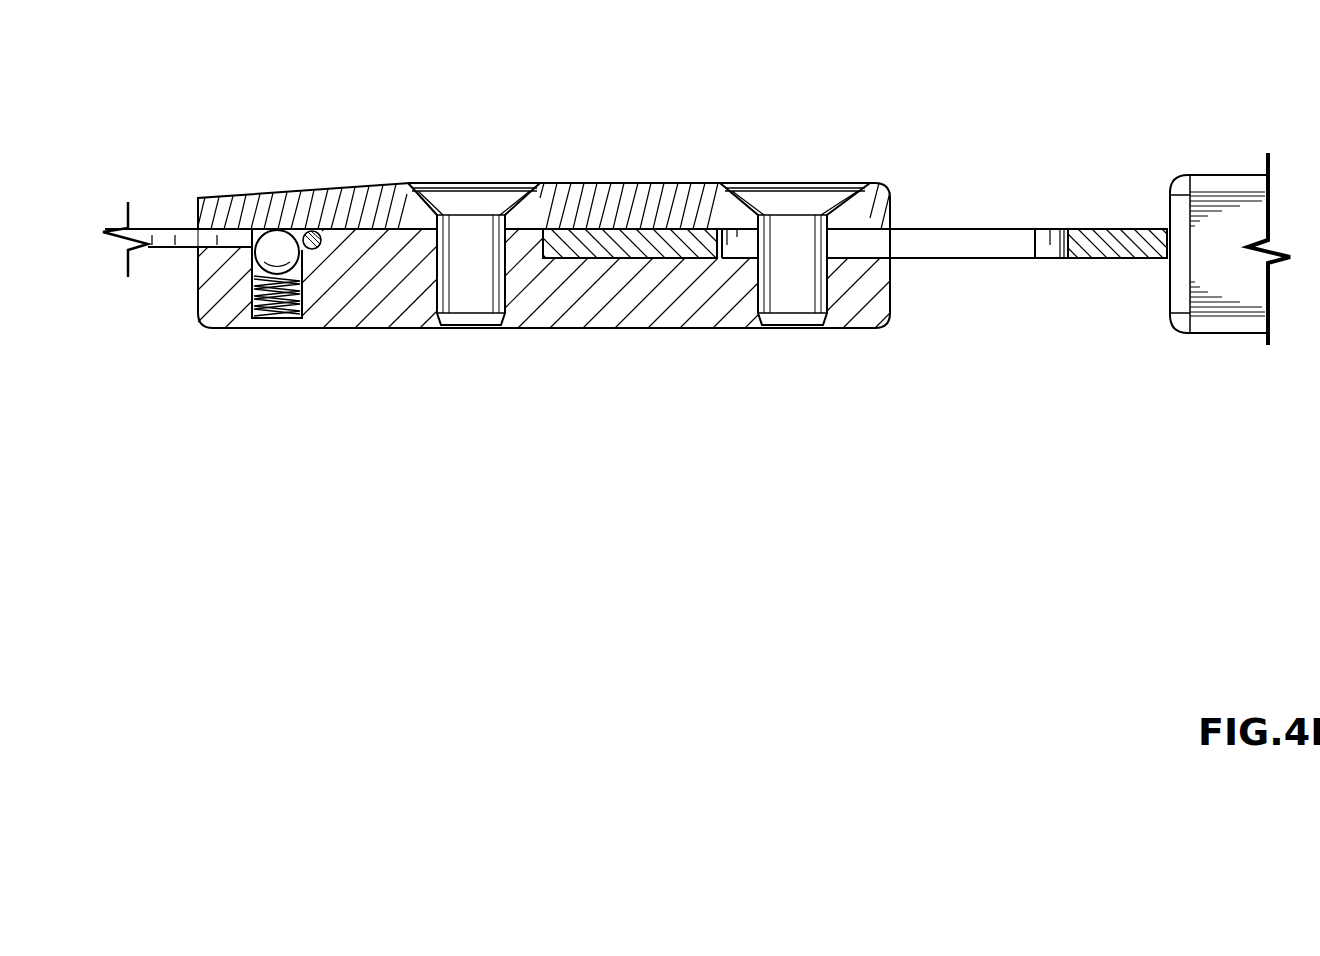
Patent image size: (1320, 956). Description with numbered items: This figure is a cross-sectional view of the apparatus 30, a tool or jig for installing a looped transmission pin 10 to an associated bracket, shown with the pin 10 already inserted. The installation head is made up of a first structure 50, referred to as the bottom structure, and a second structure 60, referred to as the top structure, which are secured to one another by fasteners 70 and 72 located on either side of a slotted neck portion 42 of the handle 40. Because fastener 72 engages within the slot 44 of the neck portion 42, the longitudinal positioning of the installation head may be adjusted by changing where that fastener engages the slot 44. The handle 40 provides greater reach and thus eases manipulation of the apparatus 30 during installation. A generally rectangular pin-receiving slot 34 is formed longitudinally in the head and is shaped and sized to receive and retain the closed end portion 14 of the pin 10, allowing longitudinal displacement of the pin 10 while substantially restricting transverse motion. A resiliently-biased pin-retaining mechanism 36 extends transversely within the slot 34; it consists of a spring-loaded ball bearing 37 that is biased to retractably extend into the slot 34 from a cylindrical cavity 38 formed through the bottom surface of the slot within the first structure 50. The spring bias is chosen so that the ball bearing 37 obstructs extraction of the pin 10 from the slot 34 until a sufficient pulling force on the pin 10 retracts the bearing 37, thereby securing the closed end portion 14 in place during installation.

The transmission pin 10 is at (168, 228).
The closed end portion 14 is at (311, 240).
The apparatus 30 is at (819, 43).
The pin-receiving slot 34 is at (197, 252).
The pin-retaining mechanism 36 is at (243, 300).
The ball bearing 37 is at (277, 250).
The cylindrical cavity 38 is at (303, 297).
The handle 40 is at (1210, 172).
The neck portion 42 is at (1090, 242).
The slot 44 is at (912, 240).
The first structure 50 is at (615, 330).
The second structure 60 is at (613, 205).
The fastener 70 is at (462, 203).
The fastener 72 is at (778, 203).